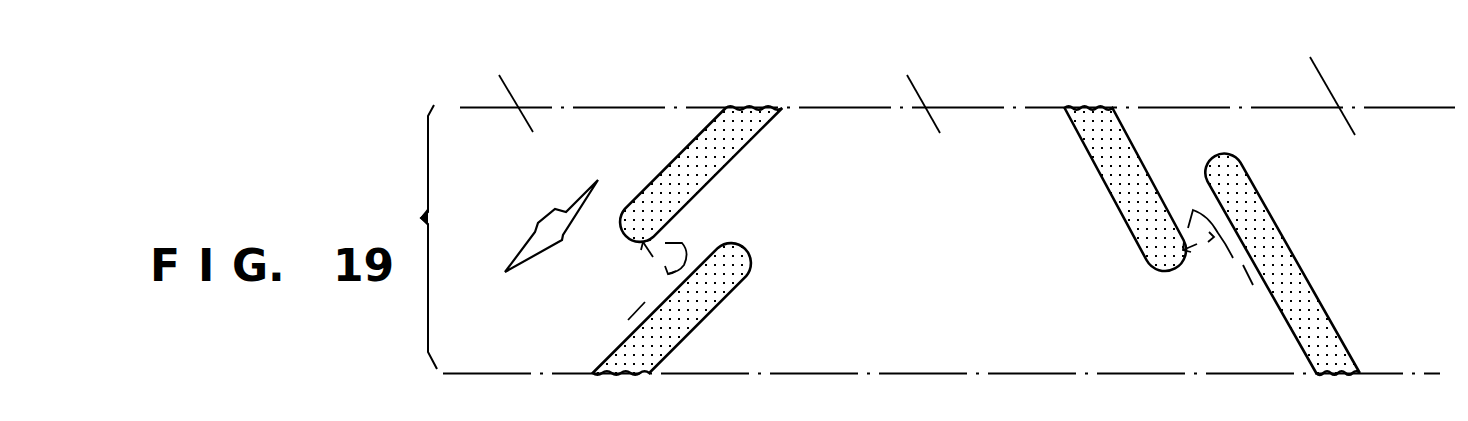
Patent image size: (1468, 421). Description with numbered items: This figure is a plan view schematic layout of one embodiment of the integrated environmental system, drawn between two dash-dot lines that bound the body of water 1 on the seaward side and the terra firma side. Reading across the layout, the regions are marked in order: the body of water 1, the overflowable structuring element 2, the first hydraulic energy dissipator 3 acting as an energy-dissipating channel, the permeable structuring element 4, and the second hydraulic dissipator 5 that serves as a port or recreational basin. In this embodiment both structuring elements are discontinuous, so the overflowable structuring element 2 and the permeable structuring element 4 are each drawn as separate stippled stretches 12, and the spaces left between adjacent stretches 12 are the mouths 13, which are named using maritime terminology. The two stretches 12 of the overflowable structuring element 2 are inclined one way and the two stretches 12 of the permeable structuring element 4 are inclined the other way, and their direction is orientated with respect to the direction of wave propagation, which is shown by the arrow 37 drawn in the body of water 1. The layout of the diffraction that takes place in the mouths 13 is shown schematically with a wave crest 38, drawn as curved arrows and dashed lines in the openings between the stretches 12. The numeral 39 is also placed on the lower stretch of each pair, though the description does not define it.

The body of water 1 is at (515, 80).
The overflowable structuring element 2 is at (722, 130).
The first hydraulic energy dissipator 3 is at (923, 83).
The permeable structuring element 4 is at (1103, 133).
The second hydraulic dissipator 5 is at (1332, 84).
The stretches 12 is at (743, 127).
The mouths 13 is at (700, 212).
The arrow 37 is at (538, 213).
The wave crest 38 is at (655, 272).
The lower strip 39 is at (690, 303).